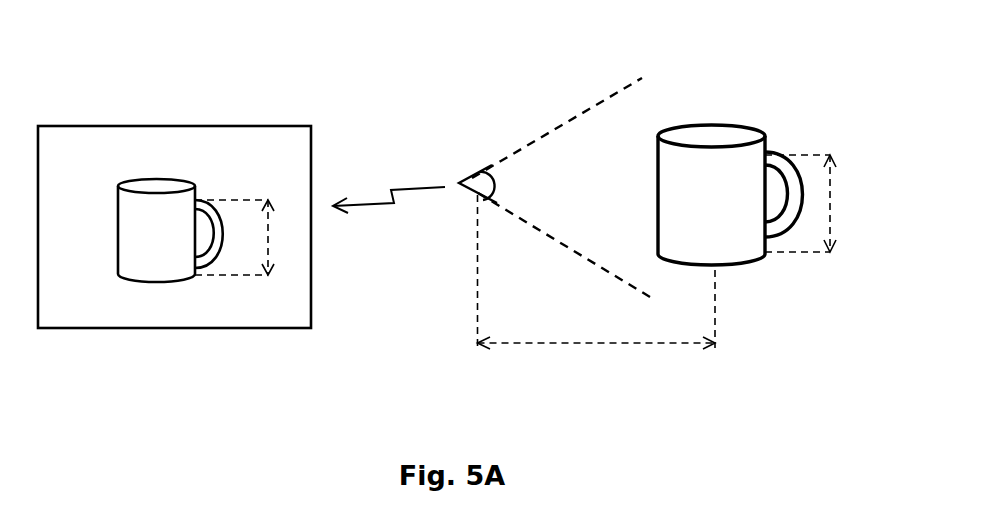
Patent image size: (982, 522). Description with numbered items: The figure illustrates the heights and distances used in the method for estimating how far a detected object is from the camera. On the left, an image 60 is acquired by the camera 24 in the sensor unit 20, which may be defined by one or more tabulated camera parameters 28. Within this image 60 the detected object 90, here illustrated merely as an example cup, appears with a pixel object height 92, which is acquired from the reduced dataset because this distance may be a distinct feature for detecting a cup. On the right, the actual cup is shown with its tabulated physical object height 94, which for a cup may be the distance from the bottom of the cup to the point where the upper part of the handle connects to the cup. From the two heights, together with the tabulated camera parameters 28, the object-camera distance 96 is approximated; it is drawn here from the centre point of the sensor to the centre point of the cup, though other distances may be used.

The image 60 is at (174, 126).
The pixel object height 92 is at (277, 238).
The sensor unit 20 is at (491, 181).
The camera 24 is at (491, 181).
The tabulated camera parameter 28 is at (480, 168).
The detected object 90 is at (715, 117).
The tabulated physical object height 94 is at (830, 200).
The object-camera distance 96 is at (565, 345).